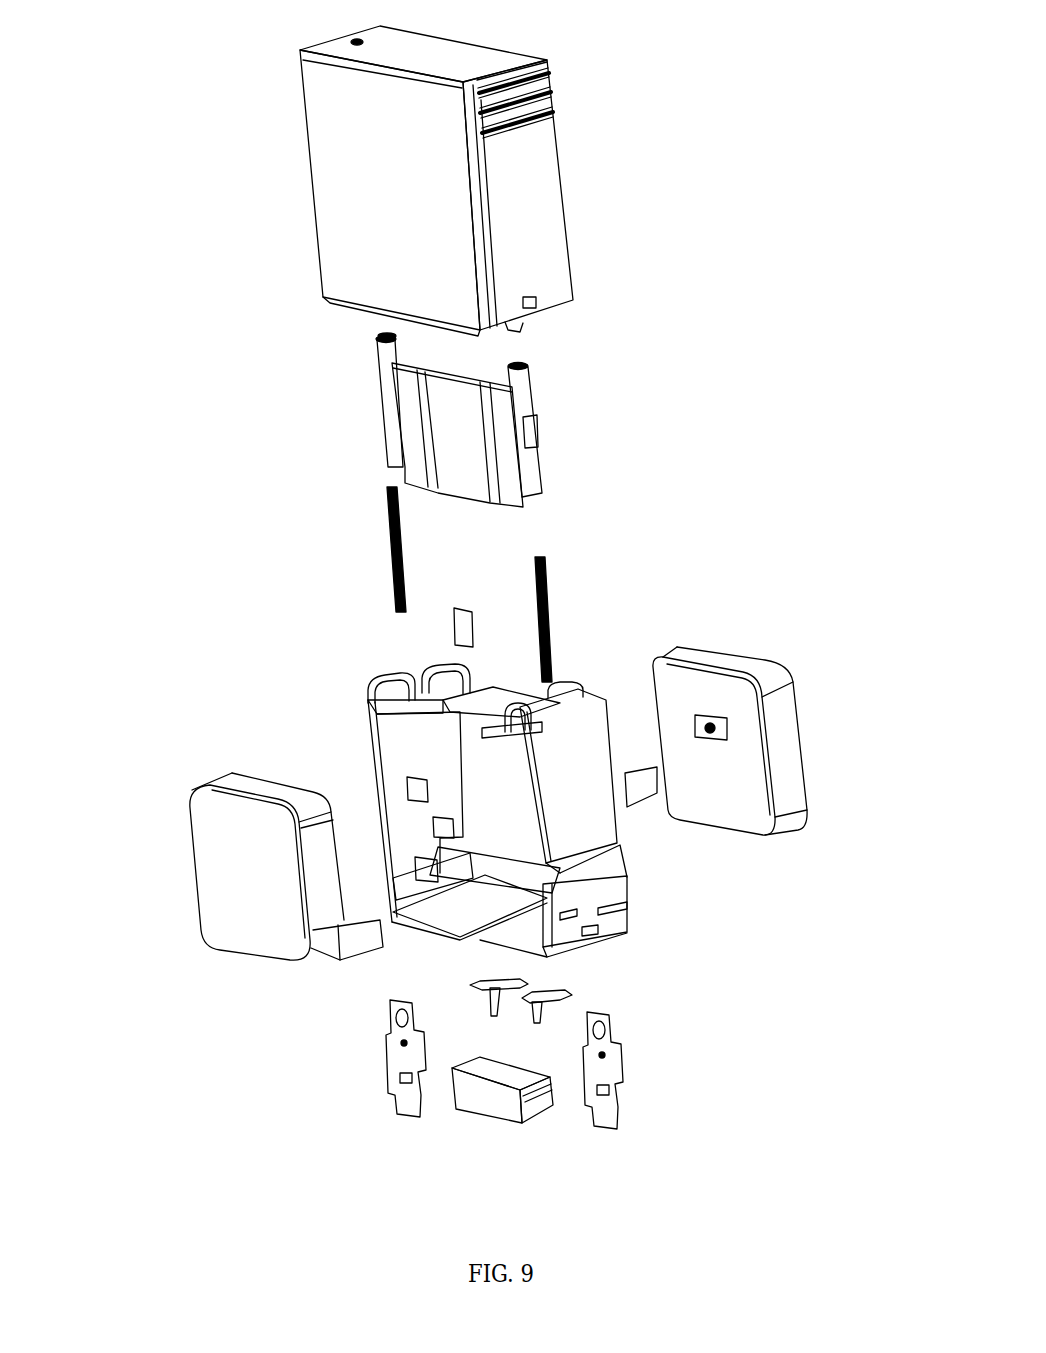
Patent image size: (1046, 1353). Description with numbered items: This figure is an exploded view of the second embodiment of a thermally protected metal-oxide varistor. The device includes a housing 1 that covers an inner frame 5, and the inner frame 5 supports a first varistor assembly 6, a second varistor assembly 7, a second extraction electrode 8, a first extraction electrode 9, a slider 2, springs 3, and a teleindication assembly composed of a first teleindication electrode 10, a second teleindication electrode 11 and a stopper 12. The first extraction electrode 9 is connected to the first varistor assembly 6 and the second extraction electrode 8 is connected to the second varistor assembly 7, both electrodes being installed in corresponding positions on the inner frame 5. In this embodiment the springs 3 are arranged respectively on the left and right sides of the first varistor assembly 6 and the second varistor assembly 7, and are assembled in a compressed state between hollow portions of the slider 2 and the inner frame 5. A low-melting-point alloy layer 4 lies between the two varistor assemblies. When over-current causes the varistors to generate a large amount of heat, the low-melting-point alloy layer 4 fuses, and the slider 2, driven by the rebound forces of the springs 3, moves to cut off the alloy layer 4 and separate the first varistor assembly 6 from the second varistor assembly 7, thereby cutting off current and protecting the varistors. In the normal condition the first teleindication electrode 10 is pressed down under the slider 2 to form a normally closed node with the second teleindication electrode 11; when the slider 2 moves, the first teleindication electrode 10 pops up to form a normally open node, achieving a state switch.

The housing 1 is at (329, 182).
The slider 2 is at (313, 422).
The spring 3 is at (500, 572).
The low-melting-point alloy layer 4 is at (279, 621).
The inner frame 5 is at (356, 810).
The first varistor assembly 6 is at (234, 864).
The second varistor assembly 7 is at (771, 741).
The second extraction electrode 8 is at (255, 1058).
The first extraction electrode 9 is at (750, 1041).
The first teleindication electrode 10 is at (306, 996).
The second teleindication electrode 11 is at (719, 949).
The stopper 12 is at (319, 1124).